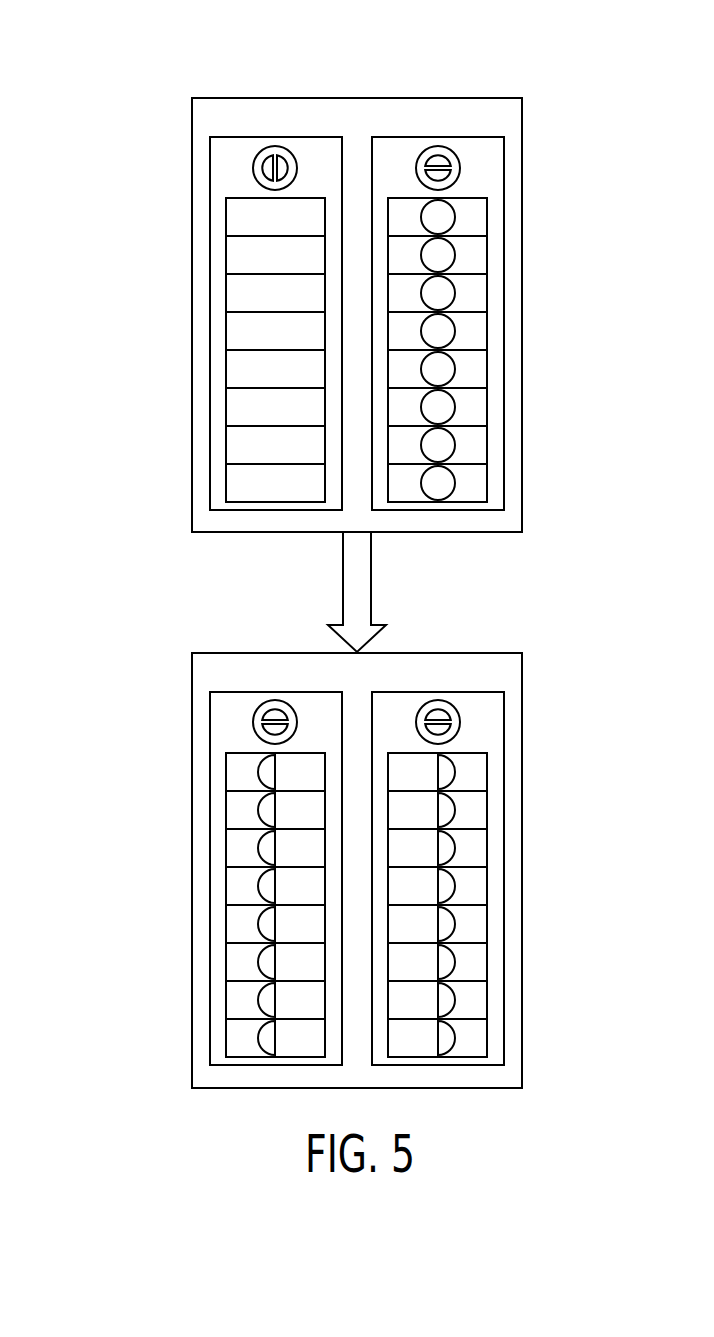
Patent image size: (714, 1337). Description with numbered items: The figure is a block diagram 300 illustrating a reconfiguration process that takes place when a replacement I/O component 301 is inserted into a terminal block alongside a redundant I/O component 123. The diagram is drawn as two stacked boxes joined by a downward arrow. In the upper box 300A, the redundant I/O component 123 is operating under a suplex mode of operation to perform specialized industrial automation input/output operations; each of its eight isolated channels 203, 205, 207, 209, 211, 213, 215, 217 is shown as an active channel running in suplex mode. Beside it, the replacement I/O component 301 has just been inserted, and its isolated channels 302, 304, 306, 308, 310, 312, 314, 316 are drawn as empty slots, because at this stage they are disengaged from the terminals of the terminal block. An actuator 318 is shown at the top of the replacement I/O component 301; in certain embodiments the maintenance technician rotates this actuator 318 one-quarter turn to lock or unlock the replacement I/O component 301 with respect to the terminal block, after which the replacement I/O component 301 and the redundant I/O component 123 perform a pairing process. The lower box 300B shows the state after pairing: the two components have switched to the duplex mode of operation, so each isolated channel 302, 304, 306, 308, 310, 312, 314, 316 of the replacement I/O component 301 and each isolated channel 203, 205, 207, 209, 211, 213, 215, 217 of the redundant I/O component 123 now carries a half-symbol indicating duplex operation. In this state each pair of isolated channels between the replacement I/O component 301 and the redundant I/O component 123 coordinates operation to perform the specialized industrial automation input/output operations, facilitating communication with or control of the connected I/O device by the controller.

The block diagram 300 is at (170, 40).
The box 300A is at (358, 98).
The box 300B is at (278, 653).
The replacement I/O component 301 is at (277, 137).
The redundant I/O component 123 is at (440, 137).
The actuator 318 is at (253, 168).
The isolated channel 302 is at (246, 217).
The isolated channel 304 is at (246, 255).
The isolated channel 306 is at (246, 293).
The isolated channel 308 is at (246, 331).
The isolated channel 310 is at (246, 369).
The isolated channel 312 is at (246, 407).
The isolated channel 314 is at (246, 445).
The isolated channel 316 is at (246, 483).
The isolated channel 203 is at (467, 217).
The isolated channel 205 is at (467, 255).
The isolated channel 207 is at (467, 293).
The isolated channel 209 is at (467, 331).
The isolated channel 211 is at (467, 369).
The isolated channel 213 is at (467, 407).
The isolated channel 215 is at (467, 445).
The isolated channel 217 is at (467, 483).